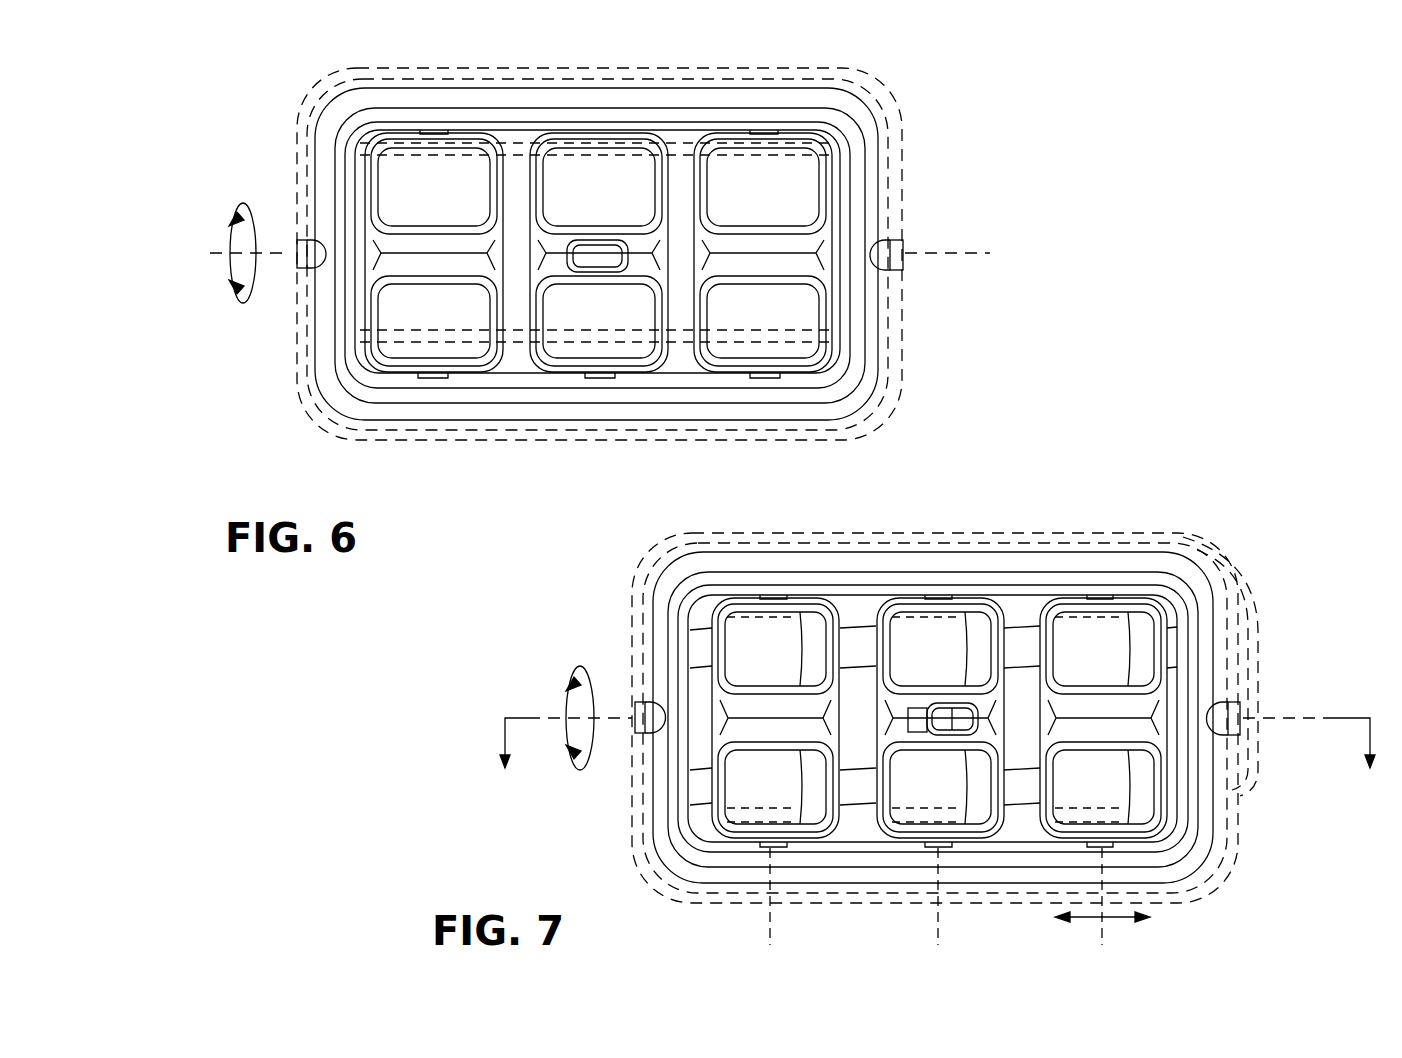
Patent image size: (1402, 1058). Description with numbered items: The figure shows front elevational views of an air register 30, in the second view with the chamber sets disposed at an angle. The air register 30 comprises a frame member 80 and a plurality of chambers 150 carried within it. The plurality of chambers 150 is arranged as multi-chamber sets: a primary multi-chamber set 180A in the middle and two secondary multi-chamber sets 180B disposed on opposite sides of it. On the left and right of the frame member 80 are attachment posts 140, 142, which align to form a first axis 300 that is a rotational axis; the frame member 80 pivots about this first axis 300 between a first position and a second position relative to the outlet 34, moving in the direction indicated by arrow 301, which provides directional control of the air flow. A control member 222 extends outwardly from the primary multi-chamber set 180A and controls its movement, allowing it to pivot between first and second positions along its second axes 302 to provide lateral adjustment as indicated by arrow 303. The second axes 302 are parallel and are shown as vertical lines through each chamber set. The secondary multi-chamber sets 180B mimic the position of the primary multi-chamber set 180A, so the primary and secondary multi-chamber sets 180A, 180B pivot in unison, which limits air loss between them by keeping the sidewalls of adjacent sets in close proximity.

In FIG. 6, the air register 30 is at (952, 155).
In FIG. 7, the air register 30 is at (1148, 500).
In FIG. 6, the outlet 34 is at (370, 428).
In FIG. 6, the frame member 80 is at (872, 348).
In FIG. 7, the frame member 80 is at (1200, 593).
In FIG. 6, the attachment post 140 is at (297, 262).
In FIG. 6, the attachment post 142 is at (903, 248).
In FIG. 6, the plurality of chambers 150 is at (750, 145).
In FIG. 7, the plurality of chambers 150 is at (705, 610).
In FIG. 6, the primary multi-chamber set 180A is at (650, 135).
In FIG. 7, the primary multi-chamber set 180A is at (995, 605).
In FIG. 6, the secondary multi-chamber set 180B is at (376, 140).
In FIG. 7, the secondary multi-chamber set 180B is at (823, 602).
In FIG. 6, the control member 222 is at (586, 272).
In FIG. 7, the control member 222 is at (922, 738).
In FIG. 6, the first axis 300 is at (213, 250).
In FIG. 7, the first axis 300 is at (548, 718).
In FIG. 6, the arrow 301 is at (258, 215).
In FIG. 7, the arrow 301 is at (593, 685).
In FIG. 7, the second axes 302 is at (768, 926).
In FIG. 7, the lateral adjustment 303 is at (1118, 923).